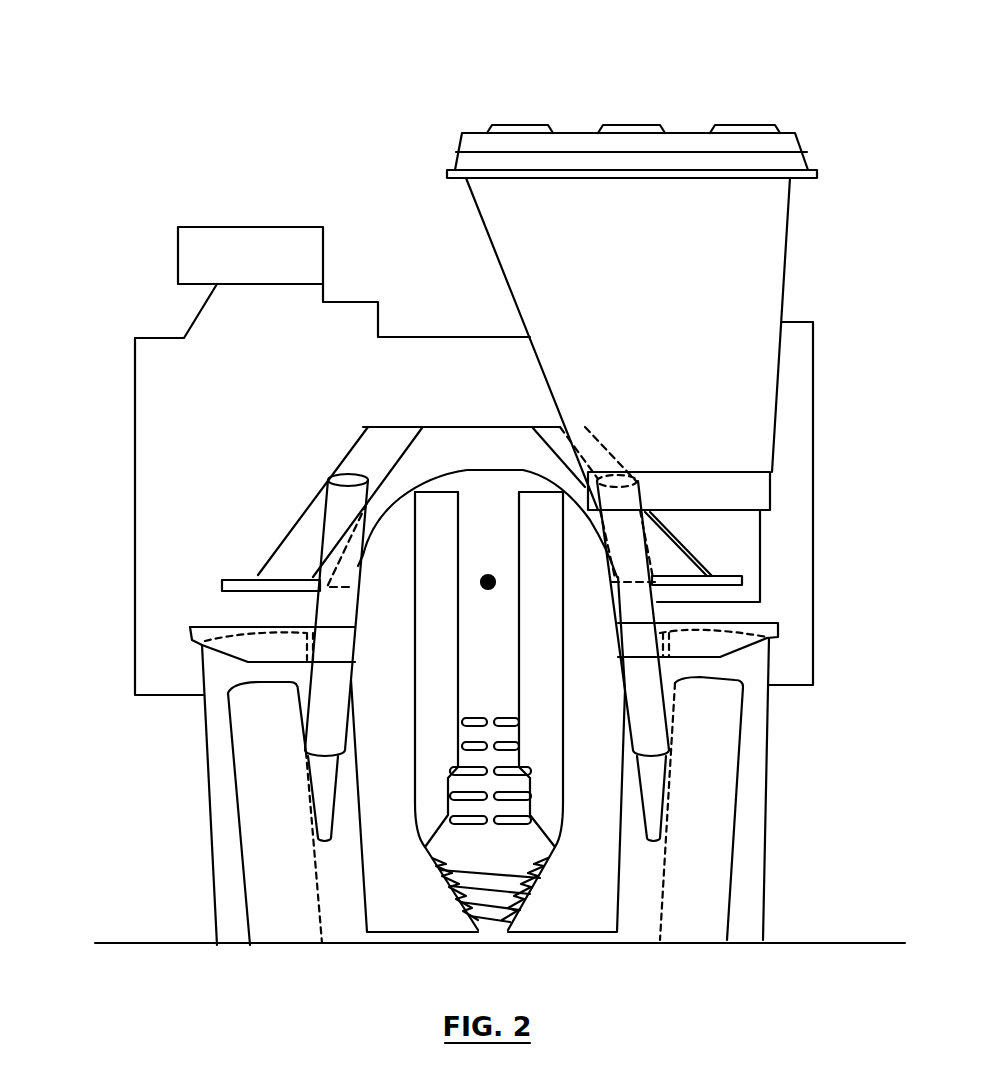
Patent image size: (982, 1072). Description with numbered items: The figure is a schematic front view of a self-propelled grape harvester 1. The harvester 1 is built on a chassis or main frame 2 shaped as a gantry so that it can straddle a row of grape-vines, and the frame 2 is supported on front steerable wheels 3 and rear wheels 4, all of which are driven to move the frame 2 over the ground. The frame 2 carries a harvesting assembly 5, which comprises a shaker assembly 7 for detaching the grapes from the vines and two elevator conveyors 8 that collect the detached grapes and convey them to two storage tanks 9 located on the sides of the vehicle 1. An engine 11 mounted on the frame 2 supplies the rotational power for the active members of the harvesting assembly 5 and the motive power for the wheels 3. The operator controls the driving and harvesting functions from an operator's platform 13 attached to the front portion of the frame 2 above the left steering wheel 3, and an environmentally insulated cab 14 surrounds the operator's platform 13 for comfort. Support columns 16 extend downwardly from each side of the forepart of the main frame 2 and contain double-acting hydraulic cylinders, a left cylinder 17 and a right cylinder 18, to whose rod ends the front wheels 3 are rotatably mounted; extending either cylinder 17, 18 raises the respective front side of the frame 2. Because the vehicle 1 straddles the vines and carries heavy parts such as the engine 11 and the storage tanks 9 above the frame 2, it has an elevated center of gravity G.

The harvester 1 is at (407, 93).
The main frame 2 is at (487, 462).
The front steerable wheels 3 is at (263, 830).
The rear wheels 4 is at (230, 897).
The harvesting assembly 5 is at (445, 323).
The shaker assembly 7 is at (492, 830).
The elevator conveyors 8 is at (478, 930).
The storage tanks 9 is at (153, 338).
The engine 11 is at (118, 426).
The operator's platform 13 is at (782, 502).
The cab 14 is at (680, 138).
The support columns 16 is at (327, 697).
The left hydraulic cylinder 17 is at (627, 670).
The right hydraulic cylinder 18 is at (355, 653).
The center of gravity G is at (487, 595).